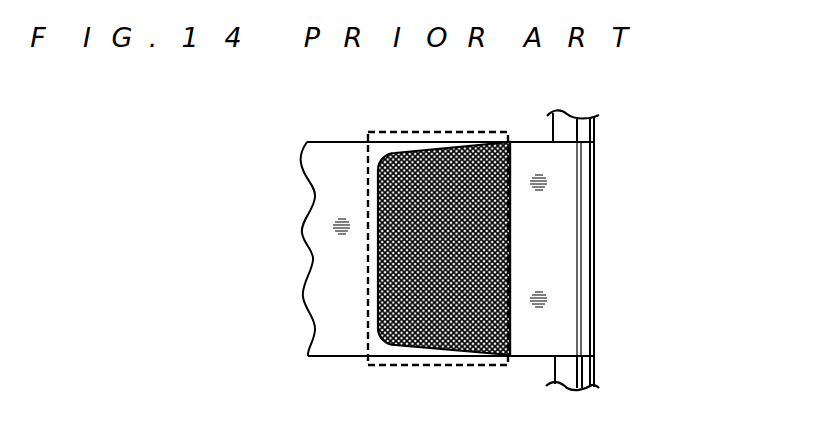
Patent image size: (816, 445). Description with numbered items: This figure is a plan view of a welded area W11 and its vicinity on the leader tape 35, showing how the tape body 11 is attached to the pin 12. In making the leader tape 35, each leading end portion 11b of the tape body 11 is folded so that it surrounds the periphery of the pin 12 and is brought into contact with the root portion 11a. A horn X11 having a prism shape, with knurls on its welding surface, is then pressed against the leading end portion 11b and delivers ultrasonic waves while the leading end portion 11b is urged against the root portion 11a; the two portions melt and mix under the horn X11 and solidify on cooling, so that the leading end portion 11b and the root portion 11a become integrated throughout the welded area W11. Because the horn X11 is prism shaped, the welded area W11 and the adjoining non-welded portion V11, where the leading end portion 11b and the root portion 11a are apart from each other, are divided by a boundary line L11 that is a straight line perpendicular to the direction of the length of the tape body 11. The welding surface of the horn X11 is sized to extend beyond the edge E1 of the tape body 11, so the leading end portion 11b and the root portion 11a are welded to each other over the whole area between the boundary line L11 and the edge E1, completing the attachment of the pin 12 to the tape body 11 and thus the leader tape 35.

The leader tape 35 is at (284, 150).
The tape body 11 is at (337, 263).
The root portion 11a is at (417, 347).
The leading end portion 11b is at (445, 312).
The horn X11 is at (367, 302).
The edge E1 is at (378, 223).
The welded area W11 is at (450, 200).
The boundary line L11 is at (512, 182).
The non-welded portion V11 is at (535, 248).
The pin 12 is at (578, 372).